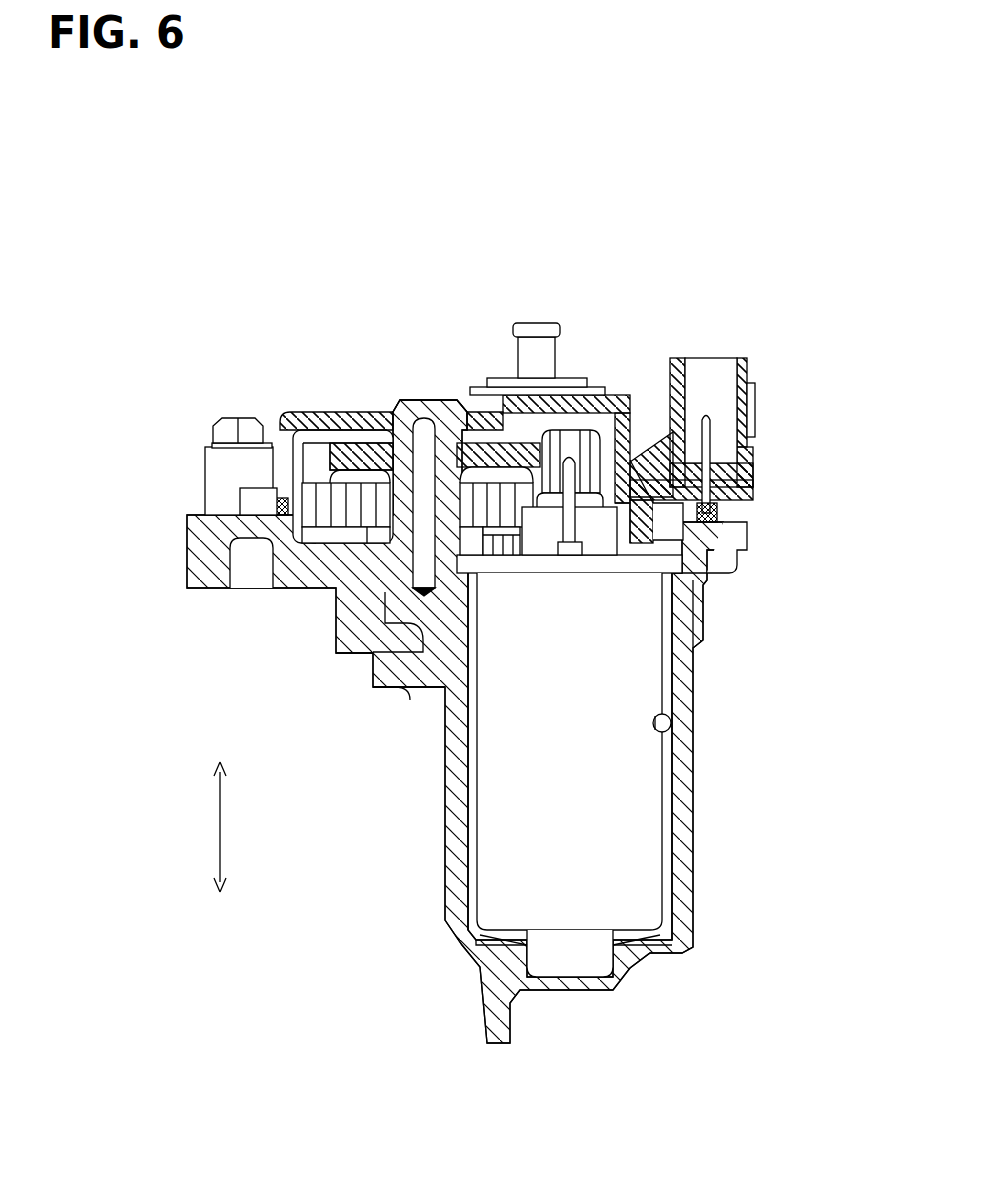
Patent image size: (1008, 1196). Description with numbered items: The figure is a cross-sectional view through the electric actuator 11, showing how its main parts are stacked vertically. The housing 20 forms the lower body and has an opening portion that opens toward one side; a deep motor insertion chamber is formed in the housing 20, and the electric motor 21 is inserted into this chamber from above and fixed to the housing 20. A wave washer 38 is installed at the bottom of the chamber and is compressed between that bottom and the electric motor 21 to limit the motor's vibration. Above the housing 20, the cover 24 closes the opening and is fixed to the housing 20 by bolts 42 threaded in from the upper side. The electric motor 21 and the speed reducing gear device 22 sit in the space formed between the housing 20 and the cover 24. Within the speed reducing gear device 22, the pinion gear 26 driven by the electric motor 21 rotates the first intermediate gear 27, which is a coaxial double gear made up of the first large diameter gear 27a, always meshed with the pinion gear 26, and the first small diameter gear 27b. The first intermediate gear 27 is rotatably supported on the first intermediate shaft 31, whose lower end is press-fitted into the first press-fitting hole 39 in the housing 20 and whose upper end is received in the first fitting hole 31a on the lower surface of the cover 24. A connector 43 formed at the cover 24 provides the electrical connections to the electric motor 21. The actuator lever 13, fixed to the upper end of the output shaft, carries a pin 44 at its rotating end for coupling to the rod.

The electric actuator 11 is at (829, 360).
The actuator lever 13 is at (592, 390).
The housing 20 is at (203, 564).
The electric motor 21 is at (638, 675).
The speed reducing gear device 22 is at (330, 432).
The cover 24 is at (347, 418).
The pinion gear 26 is at (630, 440).
The first intermediate gear 27 is at (511, 421).
The first large diameter gear 27a is at (450, 470).
The first small diameter gear 27b is at (447, 505).
The first intermediate shaft 31 is at (422, 522).
The first fitting hole 31a is at (402, 425).
The wave washer 38 is at (493, 938).
The first press-fitting hole 39 is at (437, 465).
The bolt 42 is at (230, 425).
The connector 43 is at (747, 368).
The pin 44 is at (537, 350).